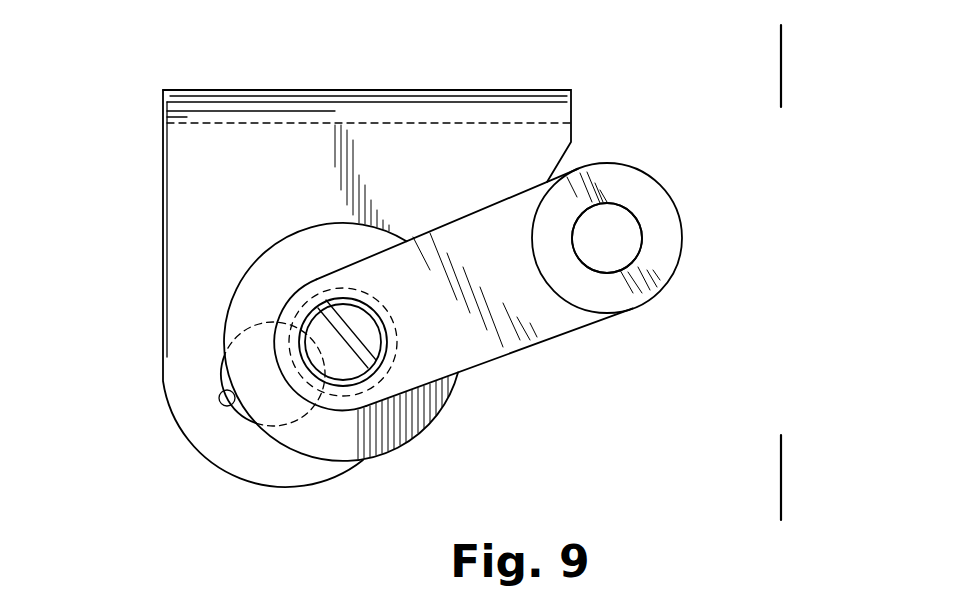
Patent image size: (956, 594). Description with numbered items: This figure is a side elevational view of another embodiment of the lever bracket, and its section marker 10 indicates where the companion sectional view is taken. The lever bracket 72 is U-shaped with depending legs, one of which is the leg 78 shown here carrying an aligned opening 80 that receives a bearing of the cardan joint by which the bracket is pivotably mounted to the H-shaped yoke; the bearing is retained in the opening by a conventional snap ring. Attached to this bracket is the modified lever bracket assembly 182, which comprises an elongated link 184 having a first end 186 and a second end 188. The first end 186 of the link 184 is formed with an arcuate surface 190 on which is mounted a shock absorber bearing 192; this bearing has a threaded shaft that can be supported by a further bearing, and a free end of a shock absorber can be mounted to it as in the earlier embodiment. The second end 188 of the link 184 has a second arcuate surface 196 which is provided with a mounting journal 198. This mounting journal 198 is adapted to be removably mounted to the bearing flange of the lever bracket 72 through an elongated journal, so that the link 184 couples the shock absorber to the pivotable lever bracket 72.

The section line 10 is at (790, 474).
The lever bracket 72 is at (154, 125).
The depending leg 78 is at (258, 180).
The opening 80 is at (233, 403).
The lever bracket assembly 182 is at (572, 336).
The elongated link 184 is at (485, 347).
The first end 186 is at (690, 235).
The second end 188 is at (295, 290).
The arcuate surface 190 is at (667, 268).
The shock absorber bearing 192 is at (617, 203).
The arcuate surface 196 is at (350, 410).
The mounting journal 198 is at (397, 328).